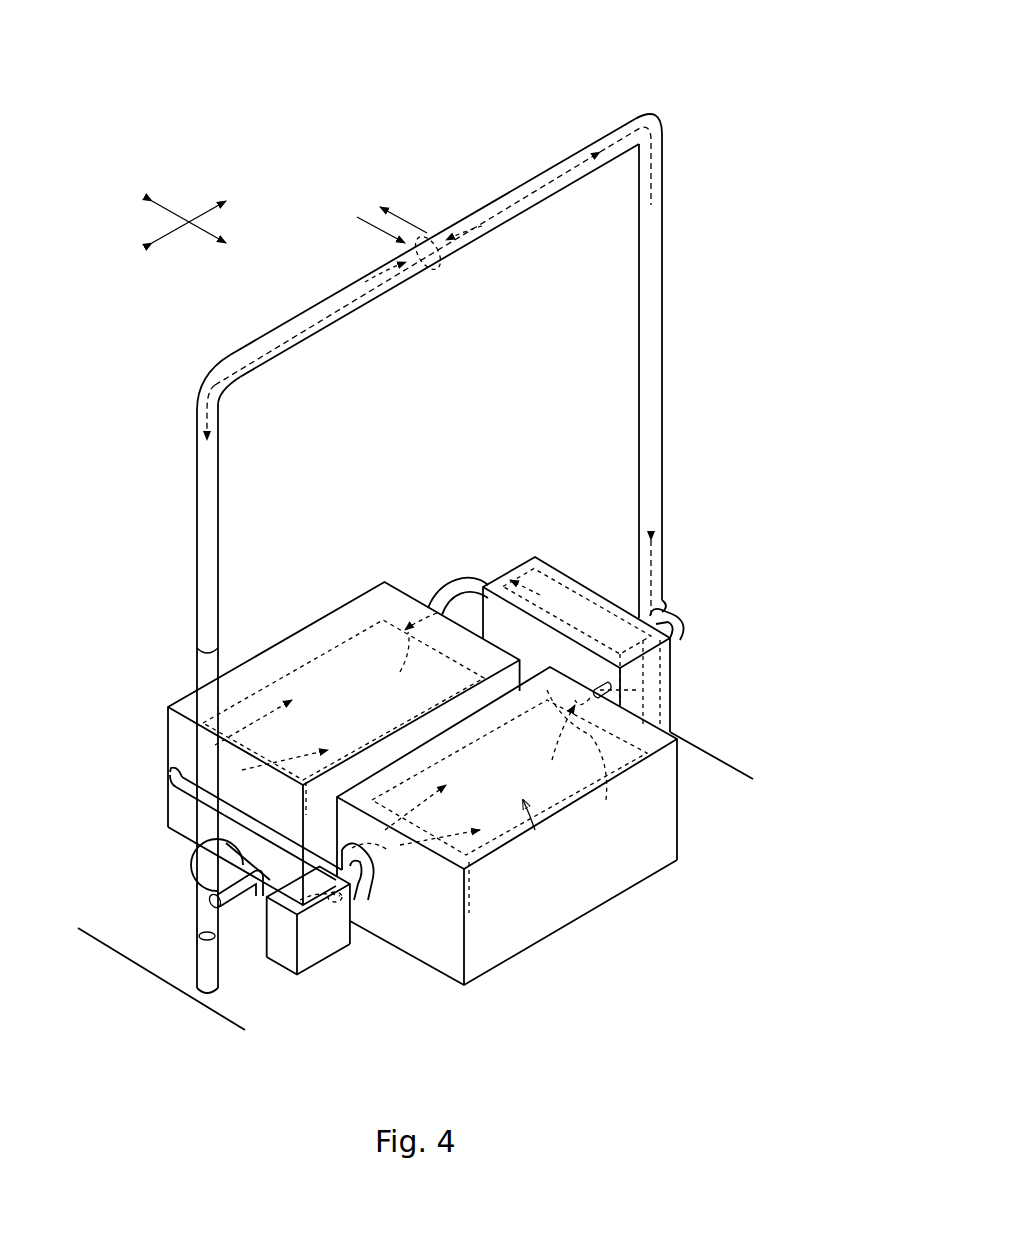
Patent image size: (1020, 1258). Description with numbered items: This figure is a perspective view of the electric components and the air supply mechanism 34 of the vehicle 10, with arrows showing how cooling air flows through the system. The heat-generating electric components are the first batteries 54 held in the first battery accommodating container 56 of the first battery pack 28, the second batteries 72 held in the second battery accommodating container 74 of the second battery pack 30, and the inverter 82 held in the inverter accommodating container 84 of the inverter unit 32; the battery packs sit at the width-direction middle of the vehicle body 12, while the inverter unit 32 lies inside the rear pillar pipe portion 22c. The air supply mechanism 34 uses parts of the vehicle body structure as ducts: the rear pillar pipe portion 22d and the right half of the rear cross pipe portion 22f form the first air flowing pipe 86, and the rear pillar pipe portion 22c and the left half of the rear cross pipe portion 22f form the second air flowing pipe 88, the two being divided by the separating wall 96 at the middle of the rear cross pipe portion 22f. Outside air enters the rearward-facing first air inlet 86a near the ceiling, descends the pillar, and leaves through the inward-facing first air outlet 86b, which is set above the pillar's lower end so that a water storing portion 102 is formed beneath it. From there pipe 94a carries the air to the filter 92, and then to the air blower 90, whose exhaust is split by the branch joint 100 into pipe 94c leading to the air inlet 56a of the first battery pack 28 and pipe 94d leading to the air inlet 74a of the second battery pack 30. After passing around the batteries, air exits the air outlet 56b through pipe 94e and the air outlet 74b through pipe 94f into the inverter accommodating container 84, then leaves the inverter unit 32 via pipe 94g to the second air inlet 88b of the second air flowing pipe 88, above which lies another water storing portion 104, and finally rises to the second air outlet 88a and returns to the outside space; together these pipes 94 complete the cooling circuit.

The thermal management system 10 is at (422, 569).
The vehicle body 12 is at (752, 757).
The rear pillar pipe portion 22c is at (655, 328).
The rear pillar pipe portion 22d is at (205, 522).
The rear cross pipe portion 22f is at (542, 190).
The first battery pack 28 is at (485, 985).
The second battery pack 30 is at (344, 680).
The inverter unit 32 is at (632, 593).
The air supply mechanism 34 is at (690, 366).
The first battery 54 is at (620, 870).
The first battery accommodating container 56 is at (545, 880).
The air inlet 56a is at (392, 892).
The air outlet 56b is at (660, 865).
The second battery 72 is at (345, 662).
The second battery accommodating container 74 is at (262, 668).
The air inlet 74a is at (170, 765).
The air outlet 74b is at (420, 600).
The inverter 82 is at (558, 600).
The inverter accommodating container 84 is at (590, 615).
The first air flowing pipe 86 is at (142, 702).
The first air inlet 86a is at (362, 282).
The first air outlet 86b is at (207, 945).
The second air flowing pipe 88 is at (690, 366).
The second air outlet 88a is at (480, 224).
The second air inlet 88b is at (668, 600).
The air blower 90 is at (318, 962).
The filter 92 is at (195, 870).
The pipe 94 is at (202, 927).
The pipe 94a is at (236, 905).
The pipe 94c is at (368, 885).
The pipe 94d is at (131, 785).
The pipe 94e is at (612, 690).
The pipe 94f is at (466, 578).
The pipe 94g is at (688, 630).
The separating wall 96 is at (434, 266).
The branch joint 100 is at (343, 905).
The water storing portion 102 is at (205, 962).
The water storing portion 104 is at (653, 680).